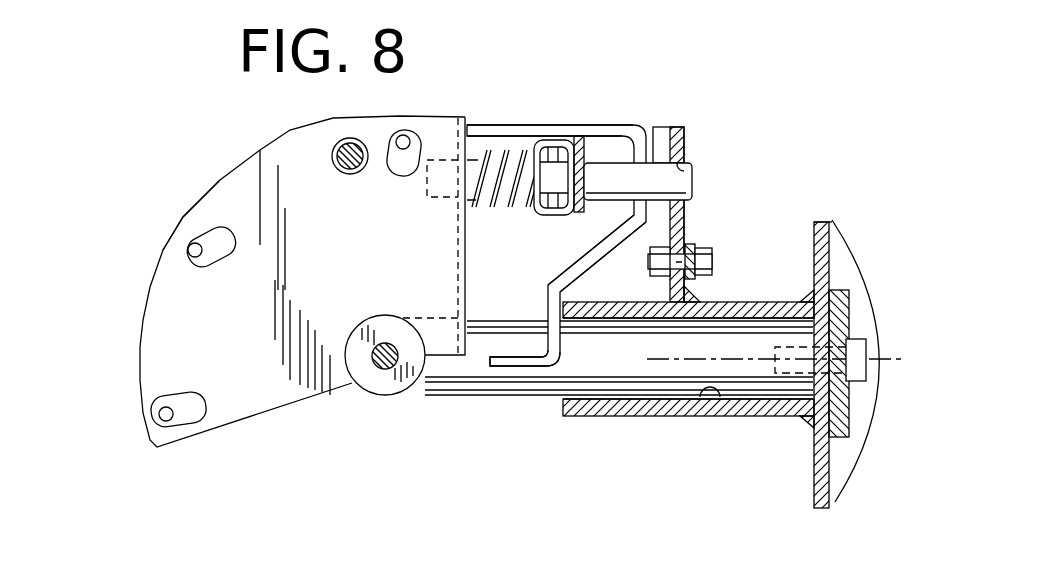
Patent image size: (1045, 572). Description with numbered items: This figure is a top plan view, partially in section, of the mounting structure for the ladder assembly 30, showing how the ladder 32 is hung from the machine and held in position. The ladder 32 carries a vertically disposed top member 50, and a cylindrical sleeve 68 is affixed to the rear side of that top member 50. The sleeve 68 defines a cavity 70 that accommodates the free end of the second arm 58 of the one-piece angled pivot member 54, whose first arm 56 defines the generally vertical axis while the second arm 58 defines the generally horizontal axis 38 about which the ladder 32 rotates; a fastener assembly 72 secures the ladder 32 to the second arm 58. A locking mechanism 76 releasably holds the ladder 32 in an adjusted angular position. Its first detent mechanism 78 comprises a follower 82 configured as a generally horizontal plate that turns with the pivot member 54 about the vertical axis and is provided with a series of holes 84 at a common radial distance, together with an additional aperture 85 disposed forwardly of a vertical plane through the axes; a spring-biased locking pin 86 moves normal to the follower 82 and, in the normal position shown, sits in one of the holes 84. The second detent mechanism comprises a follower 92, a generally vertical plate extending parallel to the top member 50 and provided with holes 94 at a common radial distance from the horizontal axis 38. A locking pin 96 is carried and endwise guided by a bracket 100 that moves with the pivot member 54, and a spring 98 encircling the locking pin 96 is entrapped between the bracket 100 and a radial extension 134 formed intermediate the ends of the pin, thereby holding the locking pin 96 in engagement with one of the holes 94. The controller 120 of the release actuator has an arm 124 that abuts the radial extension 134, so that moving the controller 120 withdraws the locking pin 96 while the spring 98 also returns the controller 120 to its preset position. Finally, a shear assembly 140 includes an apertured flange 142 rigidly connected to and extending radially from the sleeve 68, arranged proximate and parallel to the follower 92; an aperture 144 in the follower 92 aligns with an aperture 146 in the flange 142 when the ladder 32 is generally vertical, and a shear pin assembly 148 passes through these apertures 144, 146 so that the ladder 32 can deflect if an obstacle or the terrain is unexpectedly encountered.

The ladder assembly 30 is at (871, 471).
The ladder 32 is at (856, 214).
The horizontal axis 38 is at (909, 360).
The top member 50 is at (814, 492).
The pivot member 54 is at (461, 408).
The first arm 56 is at (368, 381).
The second arm 58 is at (568, 376).
The sleeve 68 is at (748, 416).
The cavity 70 is at (702, 398).
The fastener assembly 72 is at (845, 281).
The locking mechanism 76 is at (190, 156).
The detent mechanism 78 is at (124, 368).
The follower 82 is at (222, 207).
The holes 84 is at (190, 246).
The aperture 85 is at (400, 128).
The locking pin 86 is at (336, 152).
The follower 92 is at (679, 130).
The holes 94 is at (687, 170).
The locking pin 96 is at (609, 188).
The spring 98 is at (516, 207).
The bracket 100 is at (512, 367).
The controller 120 is at (593, 132).
The arm 124 is at (630, 130).
The radial extension 134 is at (536, 130).
The shear assembly 140 is at (715, 288).
The flange 142 is at (689, 246).
The aperture 144 is at (648, 234).
The aperture 146 is at (713, 266).
The shear pin assembly 148 is at (716, 247).